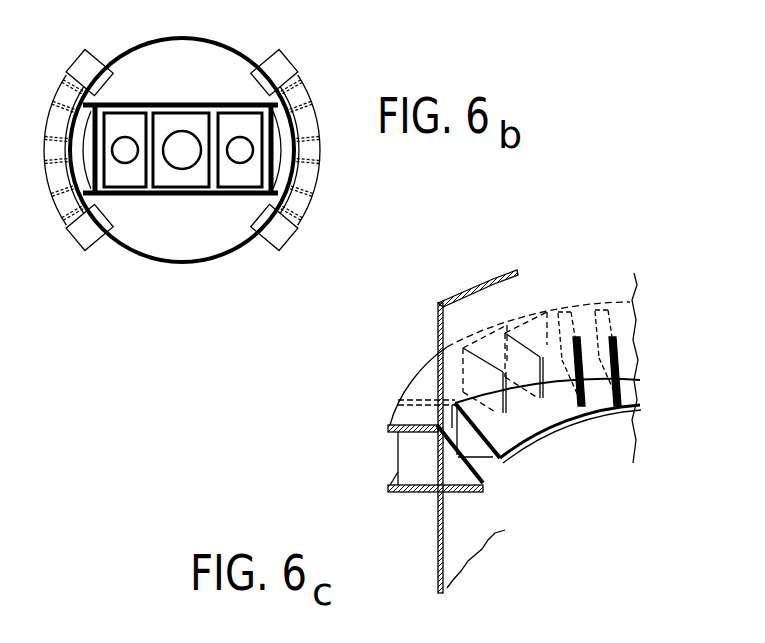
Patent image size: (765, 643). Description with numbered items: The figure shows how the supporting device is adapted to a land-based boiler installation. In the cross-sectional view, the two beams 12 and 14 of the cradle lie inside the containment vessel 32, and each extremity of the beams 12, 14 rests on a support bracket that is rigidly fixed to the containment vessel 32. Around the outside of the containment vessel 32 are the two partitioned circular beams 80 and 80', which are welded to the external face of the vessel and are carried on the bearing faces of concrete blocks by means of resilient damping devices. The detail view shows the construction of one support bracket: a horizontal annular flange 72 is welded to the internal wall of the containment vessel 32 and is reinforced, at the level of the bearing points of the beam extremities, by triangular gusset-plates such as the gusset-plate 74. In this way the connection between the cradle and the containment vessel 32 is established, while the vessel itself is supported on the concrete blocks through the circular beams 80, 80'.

In FIG. 6b, the partitioned circular beam 80 is at (78, 131).
In FIG. 6b, the partitioned circular beam 80' is at (290, 129).
In FIG. 6b, the beam 14 is at (183, 107).
In FIG. 6b, the beam 12 is at (178, 194).
In FIG. 6c, the containment vessel 32 is at (437, 338).
In FIG. 6c, the horizontal annular flange 72 is at (548, 412).
In FIG. 6c, the triangular gusset-plate 74 is at (467, 492).